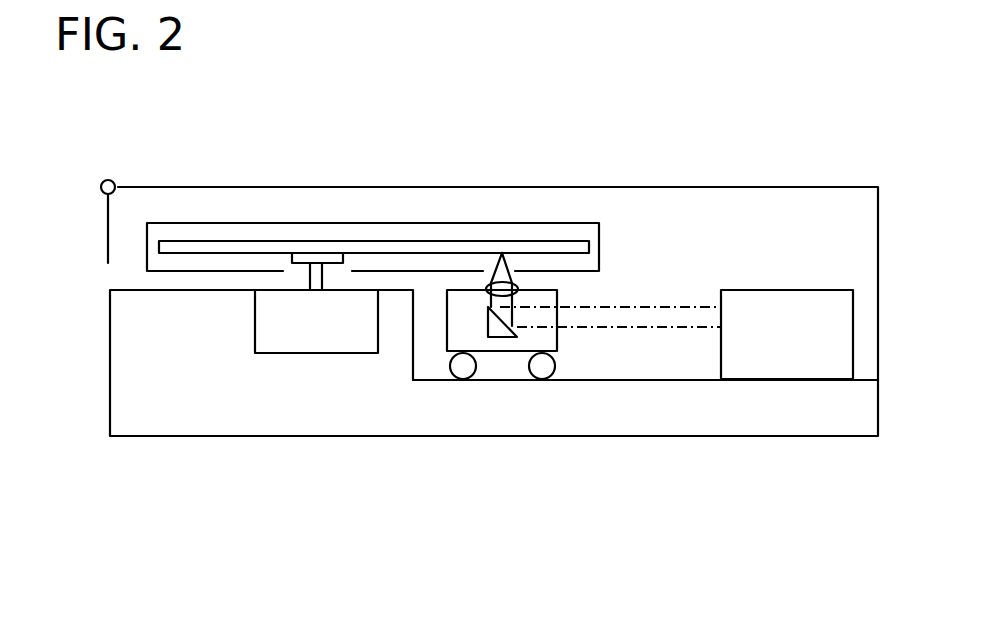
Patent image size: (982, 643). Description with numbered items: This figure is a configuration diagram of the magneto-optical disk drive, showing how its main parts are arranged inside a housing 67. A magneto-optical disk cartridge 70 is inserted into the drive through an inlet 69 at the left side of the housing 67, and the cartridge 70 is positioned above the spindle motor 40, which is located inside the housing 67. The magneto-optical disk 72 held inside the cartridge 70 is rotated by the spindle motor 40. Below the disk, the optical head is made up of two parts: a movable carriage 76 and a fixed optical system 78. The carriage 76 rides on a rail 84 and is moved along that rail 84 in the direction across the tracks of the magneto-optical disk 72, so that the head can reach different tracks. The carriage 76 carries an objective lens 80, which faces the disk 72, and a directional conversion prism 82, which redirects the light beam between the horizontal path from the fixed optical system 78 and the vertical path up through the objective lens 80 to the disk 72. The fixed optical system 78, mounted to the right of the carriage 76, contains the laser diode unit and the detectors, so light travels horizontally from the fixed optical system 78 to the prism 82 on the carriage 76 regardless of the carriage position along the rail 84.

The housing 67 is at (716, 186).
The inlet 69 is at (107, 228).
The magneto-optical disk cartridge 70 is at (245, 222).
The magneto-optical disk 72 is at (483, 242).
The spindle motor 40 is at (316, 353).
The objective lens 80 is at (518, 285).
The directional conversion prism 82 is at (488, 307).
The carriage 76 is at (503, 351).
The fixed optical system 78 is at (770, 290).
The rail 84 is at (663, 380).